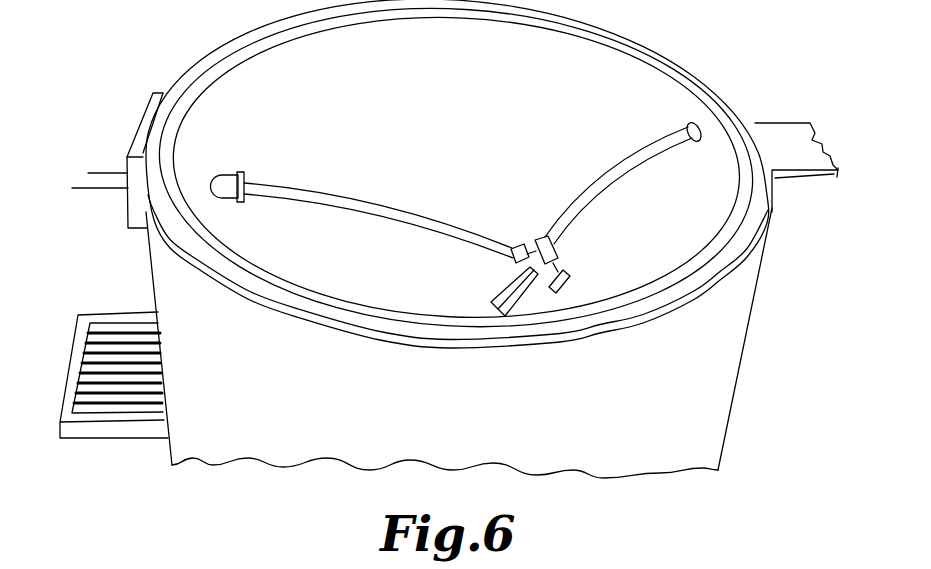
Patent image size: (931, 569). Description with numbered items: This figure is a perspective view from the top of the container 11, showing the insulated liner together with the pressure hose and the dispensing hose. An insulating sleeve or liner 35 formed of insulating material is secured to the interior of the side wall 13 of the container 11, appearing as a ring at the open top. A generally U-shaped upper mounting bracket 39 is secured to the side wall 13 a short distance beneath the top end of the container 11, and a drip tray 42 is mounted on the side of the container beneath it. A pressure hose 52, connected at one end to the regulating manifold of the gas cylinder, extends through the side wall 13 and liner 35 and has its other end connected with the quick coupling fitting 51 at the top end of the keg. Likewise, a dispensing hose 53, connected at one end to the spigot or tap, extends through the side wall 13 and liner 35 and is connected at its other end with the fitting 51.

The container 11 is at (732, 413).
The side wall 13 is at (641, 440).
The insulating sleeve or liner 35 is at (222, 75).
The upper mounting bracket 39 is at (135, 218).
The drip tray 42 is at (98, 435).
The quick coupling fitting 51 is at (551, 268).
The pressure hose 52 is at (612, 174).
The dispensing hose 53 is at (333, 198).